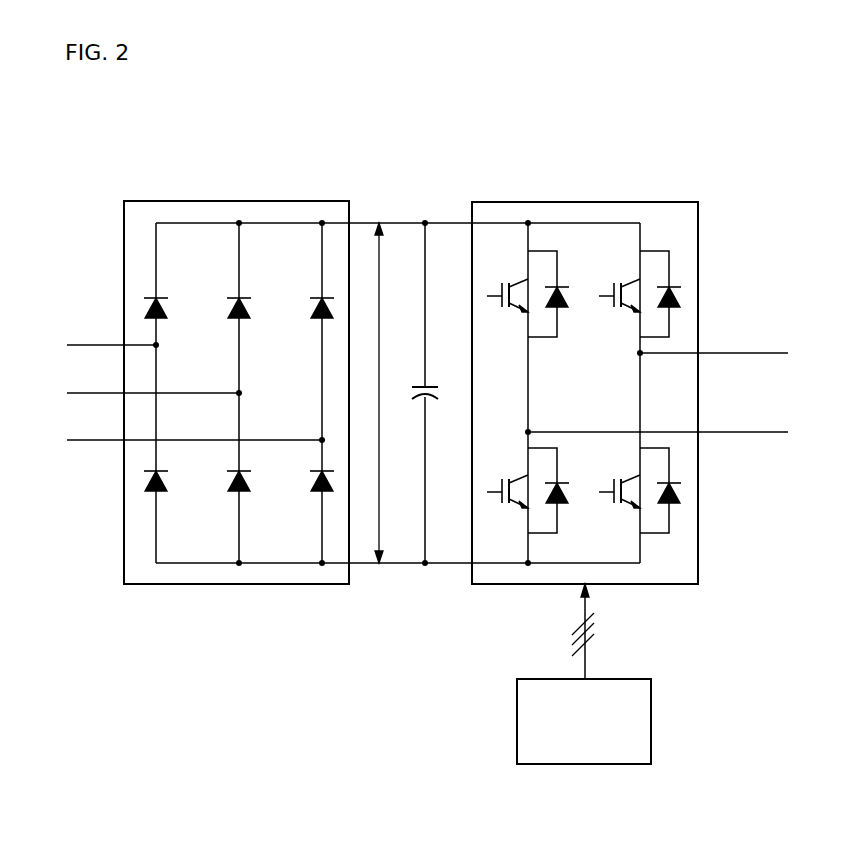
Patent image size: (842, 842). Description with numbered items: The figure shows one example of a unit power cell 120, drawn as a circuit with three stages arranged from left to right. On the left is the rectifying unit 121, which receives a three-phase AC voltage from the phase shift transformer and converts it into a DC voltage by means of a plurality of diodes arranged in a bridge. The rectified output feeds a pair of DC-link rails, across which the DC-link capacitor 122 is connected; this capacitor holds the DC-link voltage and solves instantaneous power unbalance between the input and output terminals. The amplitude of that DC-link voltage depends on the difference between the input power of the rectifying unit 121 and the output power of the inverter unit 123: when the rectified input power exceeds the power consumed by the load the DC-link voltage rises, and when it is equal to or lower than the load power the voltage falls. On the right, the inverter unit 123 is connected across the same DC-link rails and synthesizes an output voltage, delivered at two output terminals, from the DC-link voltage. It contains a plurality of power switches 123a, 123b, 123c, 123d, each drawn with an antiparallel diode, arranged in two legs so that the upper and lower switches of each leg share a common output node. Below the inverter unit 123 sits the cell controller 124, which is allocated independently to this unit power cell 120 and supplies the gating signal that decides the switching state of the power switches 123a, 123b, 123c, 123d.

The unit power cell 120 is at (666, 168).
The rectifying unit 121 is at (238, 201).
The DC-link capacitor 122 is at (438, 393).
The inverter unit 123 is at (585, 202).
The power switch 123a is at (521, 294).
The power switch 123b is at (521, 490).
The power switch 123c is at (633, 294).
The power switch 123d is at (633, 490).
The cell controller 124 is at (517, 723).